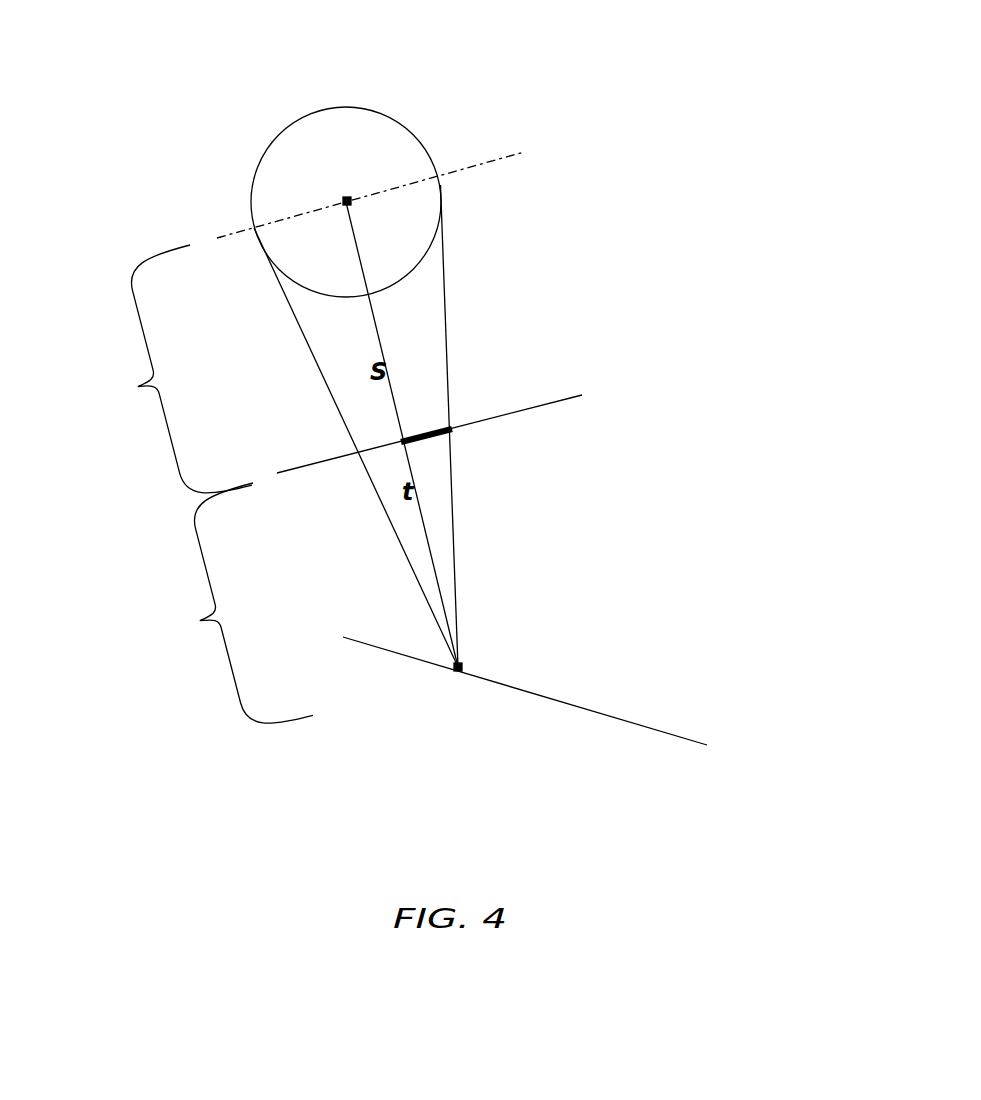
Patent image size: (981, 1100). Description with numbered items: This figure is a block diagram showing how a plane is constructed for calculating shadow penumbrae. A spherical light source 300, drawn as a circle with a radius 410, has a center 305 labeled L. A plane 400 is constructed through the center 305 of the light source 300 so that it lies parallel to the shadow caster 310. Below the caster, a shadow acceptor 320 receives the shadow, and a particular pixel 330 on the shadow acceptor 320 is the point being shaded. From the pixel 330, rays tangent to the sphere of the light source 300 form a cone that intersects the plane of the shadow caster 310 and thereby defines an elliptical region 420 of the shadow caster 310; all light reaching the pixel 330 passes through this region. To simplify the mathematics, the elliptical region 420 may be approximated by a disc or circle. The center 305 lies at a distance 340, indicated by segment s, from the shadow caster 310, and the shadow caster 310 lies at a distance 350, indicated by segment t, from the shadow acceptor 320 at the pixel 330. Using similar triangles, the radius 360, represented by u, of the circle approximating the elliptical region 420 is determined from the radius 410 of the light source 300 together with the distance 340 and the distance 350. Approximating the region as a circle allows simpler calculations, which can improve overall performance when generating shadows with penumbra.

The light source 300 is at (336, 91).
The center of light source 305 is at (357, 182).
The radius of the spherical light source 410 is at (276, 170).
The plane 400 is at (547, 145).
The shadow caster 310 is at (698, 390).
The radius of the approximating circle 360 is at (435, 413).
The elliptical region 420 is at (387, 464).
The pixel 330 is at (474, 650).
The shadow acceptor 320 is at (682, 713).
The distance between light source center and shadow caster 340 is at (132, 425).
The distance between shadow caster and shadow acceptor 350 is at (192, 657).